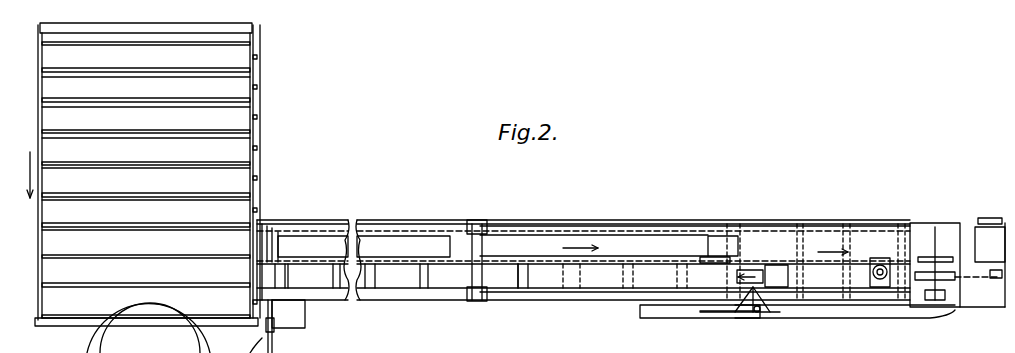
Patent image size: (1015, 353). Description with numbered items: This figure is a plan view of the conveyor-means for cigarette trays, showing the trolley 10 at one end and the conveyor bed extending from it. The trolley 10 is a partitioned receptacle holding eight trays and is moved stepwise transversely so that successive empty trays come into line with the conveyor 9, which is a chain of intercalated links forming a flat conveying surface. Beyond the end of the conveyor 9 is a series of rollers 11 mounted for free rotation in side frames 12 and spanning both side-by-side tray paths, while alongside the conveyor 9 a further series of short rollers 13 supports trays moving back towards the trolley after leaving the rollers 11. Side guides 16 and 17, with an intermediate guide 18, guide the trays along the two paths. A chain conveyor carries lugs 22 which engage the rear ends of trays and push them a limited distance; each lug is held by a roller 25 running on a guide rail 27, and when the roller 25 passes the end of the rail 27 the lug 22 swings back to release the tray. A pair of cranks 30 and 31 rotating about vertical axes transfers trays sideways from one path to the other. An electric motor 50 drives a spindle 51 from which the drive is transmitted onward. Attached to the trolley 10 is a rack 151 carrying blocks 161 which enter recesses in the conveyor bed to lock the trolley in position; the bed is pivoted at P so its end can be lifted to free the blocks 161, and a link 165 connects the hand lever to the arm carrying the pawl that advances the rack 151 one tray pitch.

The trolley 10 is at (202, 323).
The blocks 161 is at (258, 117).
The rack 151 is at (252, 326).
The conveyor 9 is at (503, 240).
The side guide 16 is at (578, 226).
The intermediate guide 18 is at (617, 258).
The side guide 17 is at (615, 297).
The short rollers 13 is at (520, 278).
The rollers 11 is at (748, 232).
The pivot P is at (478, 302).
The crank 30 is at (763, 268).
The crank 31 is at (877, 267).
The lugs 22 is at (753, 290).
The roller 25 is at (768, 308).
The guide rail 27 is at (863, 318).
The side frames 12 is at (922, 224).
The electric motor 50 is at (982, 237).
The spindle 51 is at (992, 280).
The link 165 is at (300, 308).